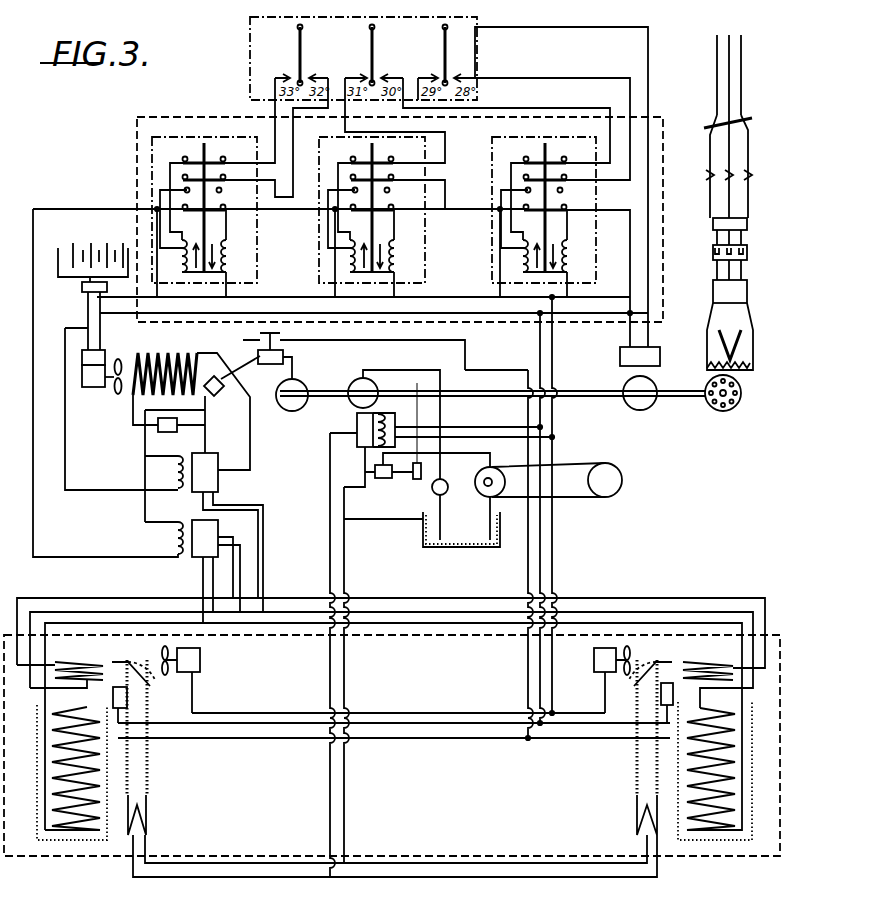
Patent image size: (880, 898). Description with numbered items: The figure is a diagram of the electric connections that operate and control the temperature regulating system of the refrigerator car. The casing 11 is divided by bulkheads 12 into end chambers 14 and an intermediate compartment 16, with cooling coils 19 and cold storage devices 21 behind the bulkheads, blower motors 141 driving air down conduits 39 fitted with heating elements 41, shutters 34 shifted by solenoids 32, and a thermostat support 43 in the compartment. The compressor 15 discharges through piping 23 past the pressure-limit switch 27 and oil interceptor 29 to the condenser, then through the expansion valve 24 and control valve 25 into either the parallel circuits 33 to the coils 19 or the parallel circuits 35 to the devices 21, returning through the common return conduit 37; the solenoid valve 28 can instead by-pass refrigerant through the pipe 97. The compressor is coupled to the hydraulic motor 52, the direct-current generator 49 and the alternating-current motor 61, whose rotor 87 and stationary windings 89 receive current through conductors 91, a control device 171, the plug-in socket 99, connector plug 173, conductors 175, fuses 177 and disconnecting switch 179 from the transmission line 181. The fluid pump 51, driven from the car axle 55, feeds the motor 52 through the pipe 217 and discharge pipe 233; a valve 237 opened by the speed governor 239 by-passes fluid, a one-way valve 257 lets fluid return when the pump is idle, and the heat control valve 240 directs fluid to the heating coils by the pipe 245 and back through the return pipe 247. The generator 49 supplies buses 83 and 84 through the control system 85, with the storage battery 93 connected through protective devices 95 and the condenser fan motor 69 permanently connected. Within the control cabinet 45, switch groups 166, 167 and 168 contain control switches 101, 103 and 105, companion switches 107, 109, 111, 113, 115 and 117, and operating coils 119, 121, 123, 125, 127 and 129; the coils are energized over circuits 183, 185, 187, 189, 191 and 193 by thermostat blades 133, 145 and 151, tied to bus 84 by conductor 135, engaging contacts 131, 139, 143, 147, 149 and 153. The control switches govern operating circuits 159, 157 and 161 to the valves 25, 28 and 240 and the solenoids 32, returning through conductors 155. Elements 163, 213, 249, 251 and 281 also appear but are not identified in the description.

The casing 11 is at (26, 848).
The bulkheads 12 is at (150, 782).
The chambers 14 is at (756, 805).
The compressor 15 is at (300, 383).
The intermediate compartment 16 is at (406, 785).
The cooling coils 19 is at (70, 662).
The cold storage devices 21 is at (50, 760).
The piping or conduits 23 is at (235, 362).
The expansion valve 24 is at (168, 432).
The control valve 25 is at (205, 571).
The pressure-limit switch 27 is at (270, 364).
The solenoid valve 28 is at (227, 532).
The oil interceptor 29 is at (232, 404).
The shutter-operating solenoids 32 is at (675, 701).
The parallel circuits 33 is at (282, 612).
The shutters 34 is at (142, 682).
The parallel circuits 35 is at (277, 627).
The common return conduit 37 is at (135, 598).
The conduits 39 is at (148, 760).
The heating elements 41 is at (150, 808).
The support 43 is at (258, 42).
The control cabinet 45 is at (137, 135).
The direct-current generator 49 is at (640, 412).
The fluid pressure generator or pump 51 is at (478, 493).
The motor 52 is at (352, 381).
The car axle 55 is at (623, 481).
The alternating current motor 61 is at (727, 412).
The condenser cooling fan motor 69 is at (92, 387).
The bus conductor 83 is at (626, 292).
The bus conductor 84 is at (594, 322).
The control system 85 is at (620, 358).
The rotor 87 is at (742, 393).
The stationary windings 89 is at (750, 336).
The conductors 91 is at (717, 268).
The storage battery 93 is at (75, 243).
The protective devices 95 is at (82, 290).
The pipe 97 is at (260, 516).
The plug-in socket 99 is at (747, 251).
The control switch 101 is at (214, 210).
The control switch 103 is at (385, 210).
The control switch 105 is at (557, 210).
The switch 107 is at (212, 162).
The switch 109 is at (380, 162).
The switch 111 is at (552, 162).
The switch 113 is at (222, 178).
The switch 115 is at (390, 178).
The switch 117 is at (563, 178).
The operating coil 119 is at (178, 256).
The operating coil 121 is at (232, 256).
The operating coil 123 is at (345, 256).
The operating coil 125 is at (400, 256).
The operating coil 127 is at (518, 256).
The operating coil 129 is at (572, 256).
The contact 131 is at (281, 72).
The thermostat device 133 is at (312, 55).
The conductor 135 is at (596, 29).
The contact 139 is at (316, 72).
The blower motors 141 is at (200, 660).
The contact 143 is at (355, 72).
The thermostat device 145 is at (384, 55).
The contact 147 is at (393, 72).
The contact 149 is at (429, 81).
The thermostat device 151 is at (457, 55).
The contact 153 is at (462, 72).
The return conductors 155 is at (412, 341).
The operating circuit 157 is at (288, 297).
The operating circuit 159 is at (100, 209).
The operating circuit 161 is at (452, 209).
The conductor 163 is at (554, 445).
The control switch group 166 is at (178, 142).
The control switch group 167 is at (316, 143).
The control switch group 168 is at (508, 143).
The electric control device 171 is at (713, 291).
The connector plug 173 is at (747, 222).
The conductors 175 is at (710, 196).
The fuses 177 is at (710, 175).
The disconnecting switch 179 is at (716, 128).
The transmission line 181 is at (717, 62).
The circuit 183 is at (276, 197).
The circuit 185 is at (276, 172).
The circuit 187 is at (447, 180).
The circuit 189 is at (447, 140).
The circuit 191 is at (616, 190).
The circuit 193 is at (588, 108).
The sump tank 213 is at (461, 529).
The pipe 217 is at (442, 383).
The discharge pipe 233 is at (377, 521).
The valve 237 is at (375, 477).
The speed governor 239 is at (415, 479).
The heat control valve 240 is at (357, 425).
The pipe 245 is at (328, 840).
The common return pipe 247 is at (346, 842).
The pipe 249 is at (548, 862).
The solenoid coil 251 is at (170, 546).
The one-way valve 257 is at (432, 492).
The solenoid coil 281 is at (152, 472).